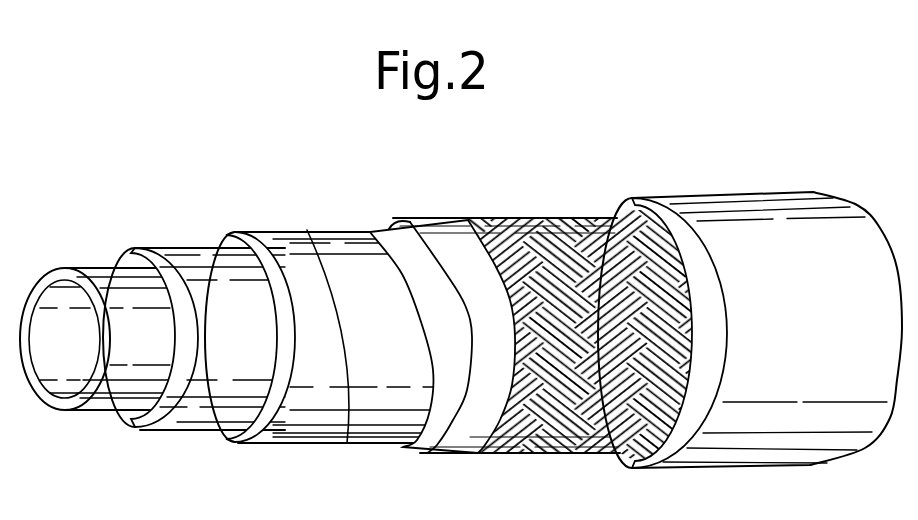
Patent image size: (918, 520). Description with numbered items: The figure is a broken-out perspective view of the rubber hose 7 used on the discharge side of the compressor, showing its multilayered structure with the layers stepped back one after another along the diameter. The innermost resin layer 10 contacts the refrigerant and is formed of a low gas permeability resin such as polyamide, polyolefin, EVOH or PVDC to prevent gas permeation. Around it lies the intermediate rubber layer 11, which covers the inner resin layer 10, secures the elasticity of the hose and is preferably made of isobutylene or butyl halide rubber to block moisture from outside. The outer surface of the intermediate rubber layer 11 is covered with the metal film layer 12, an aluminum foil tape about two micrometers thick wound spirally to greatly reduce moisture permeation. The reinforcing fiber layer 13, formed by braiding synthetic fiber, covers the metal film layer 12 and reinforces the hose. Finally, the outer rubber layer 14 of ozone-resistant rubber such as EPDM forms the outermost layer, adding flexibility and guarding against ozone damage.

The rubber hose 7 is at (461, 295).
The inner resin layer 10 is at (57, 268).
The intermediate rubber layer 11 is at (197, 273).
The metal film layer 12 is at (342, 265).
The reinforcing fiber layer 13 is at (548, 250).
The outer rubber layer 14 is at (765, 235).